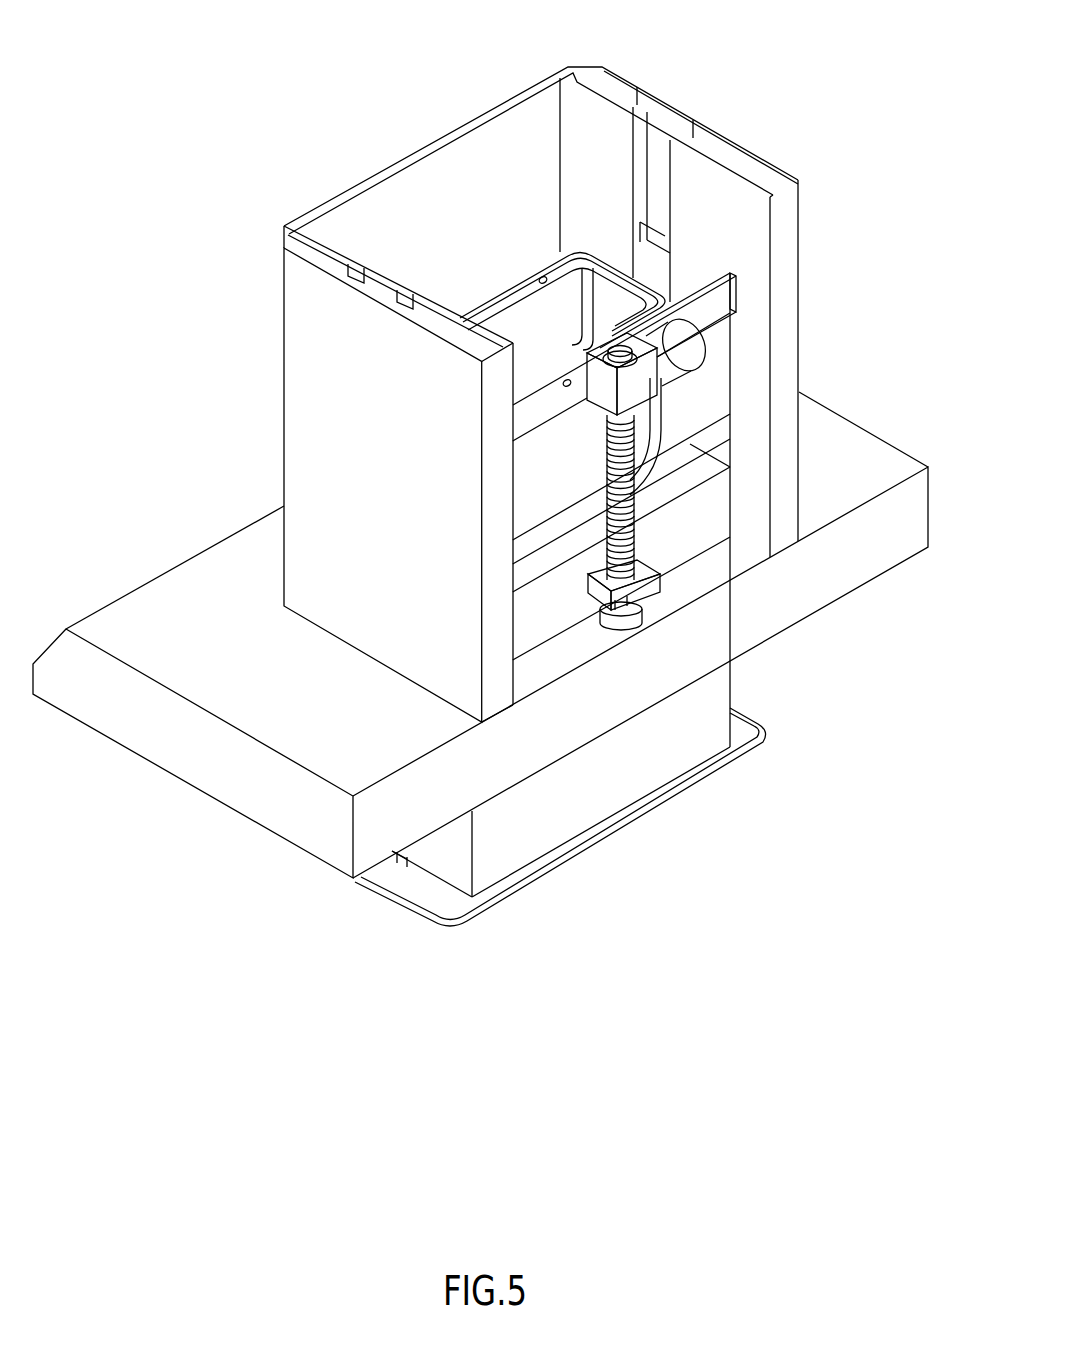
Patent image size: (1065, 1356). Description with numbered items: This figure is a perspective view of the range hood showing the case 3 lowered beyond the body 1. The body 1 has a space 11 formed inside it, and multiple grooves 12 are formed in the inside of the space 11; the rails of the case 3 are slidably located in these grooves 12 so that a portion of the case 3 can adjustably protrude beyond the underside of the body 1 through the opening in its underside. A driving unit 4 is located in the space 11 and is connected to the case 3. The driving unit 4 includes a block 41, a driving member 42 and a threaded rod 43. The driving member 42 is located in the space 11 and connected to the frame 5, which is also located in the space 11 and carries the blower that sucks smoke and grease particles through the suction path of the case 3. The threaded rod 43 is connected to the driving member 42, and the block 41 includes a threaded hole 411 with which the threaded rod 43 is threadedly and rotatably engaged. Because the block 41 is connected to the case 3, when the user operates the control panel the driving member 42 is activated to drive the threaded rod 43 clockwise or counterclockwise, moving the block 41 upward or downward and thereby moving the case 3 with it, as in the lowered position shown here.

The body 1 is at (551, 361).
The space 11 is at (424, 182).
The grooves 12 is at (653, 242).
The case 3 is at (603, 792).
The driving unit 4 is at (676, 500).
The block 41 is at (594, 600).
The threaded hole 411 is at (632, 583).
The driving member 42 is at (675, 393).
The threaded rod 43 is at (640, 543).
The frame 5 is at (732, 295).